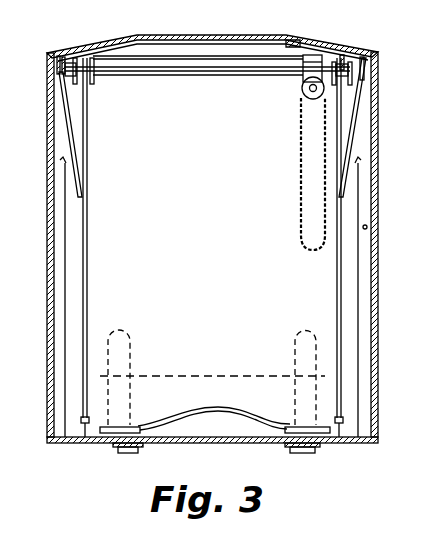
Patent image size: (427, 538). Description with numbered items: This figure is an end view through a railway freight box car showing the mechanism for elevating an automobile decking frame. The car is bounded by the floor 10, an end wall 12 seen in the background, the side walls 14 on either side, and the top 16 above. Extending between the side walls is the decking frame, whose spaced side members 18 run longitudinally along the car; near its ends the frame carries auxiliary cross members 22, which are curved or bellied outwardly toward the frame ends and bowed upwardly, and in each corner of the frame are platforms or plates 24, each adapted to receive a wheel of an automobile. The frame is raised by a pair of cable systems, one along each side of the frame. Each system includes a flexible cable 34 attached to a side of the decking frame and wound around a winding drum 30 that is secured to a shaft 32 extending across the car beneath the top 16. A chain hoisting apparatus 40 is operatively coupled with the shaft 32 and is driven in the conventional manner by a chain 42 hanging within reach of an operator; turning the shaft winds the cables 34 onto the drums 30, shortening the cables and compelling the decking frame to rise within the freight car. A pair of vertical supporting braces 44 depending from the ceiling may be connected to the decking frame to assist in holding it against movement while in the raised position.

The floor 10 is at (170, 424).
The end wall 12 is at (212, 239).
The side walls 14 is at (55, 312).
The top 16 is at (190, 42).
The side members 18 is at (82, 440).
The auxiliary cross members 22 is at (232, 412).
The platforms or plates 24 is at (128, 422).
The winding drum 30 is at (82, 55).
The shaft 32 is at (250, 71).
The cables 34 is at (90, 322).
The chain hoisting apparatus 40 is at (301, 90).
The chain 42 is at (300, 186).
The vertical supporting braces 44 is at (77, 131).